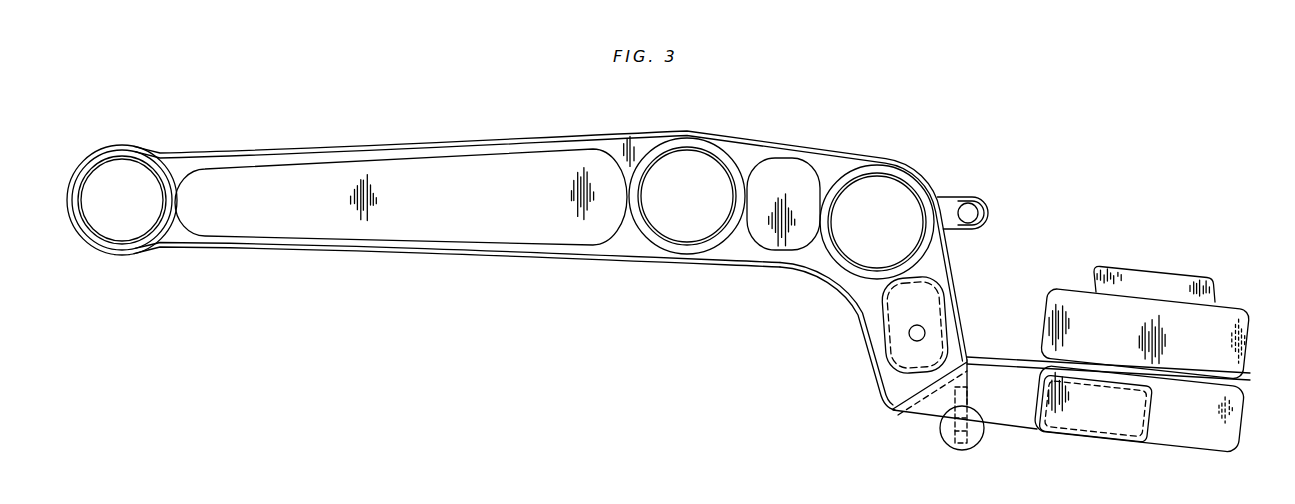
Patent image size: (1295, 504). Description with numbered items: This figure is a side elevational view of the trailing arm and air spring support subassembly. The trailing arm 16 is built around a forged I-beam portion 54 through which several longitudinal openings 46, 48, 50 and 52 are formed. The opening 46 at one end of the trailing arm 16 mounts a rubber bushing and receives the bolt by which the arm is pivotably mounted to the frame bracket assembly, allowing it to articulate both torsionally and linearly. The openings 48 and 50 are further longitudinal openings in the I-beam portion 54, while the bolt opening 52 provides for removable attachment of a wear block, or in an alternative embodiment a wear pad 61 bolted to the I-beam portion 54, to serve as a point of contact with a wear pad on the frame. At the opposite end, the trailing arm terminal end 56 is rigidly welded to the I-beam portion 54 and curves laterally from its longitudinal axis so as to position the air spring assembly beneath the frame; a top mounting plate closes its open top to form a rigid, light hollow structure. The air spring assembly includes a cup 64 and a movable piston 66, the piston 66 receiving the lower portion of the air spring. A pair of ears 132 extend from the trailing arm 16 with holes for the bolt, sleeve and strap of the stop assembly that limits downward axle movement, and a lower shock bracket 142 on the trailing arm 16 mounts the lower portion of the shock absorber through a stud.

The trailing arm 16 is at (355, 131).
The opening 46 is at (107, 181).
The opening 48 is at (683, 168).
The opening 50 is at (884, 197).
The bolt opening 52 is at (925, 333).
The I-beam portion 54 is at (473, 170).
The trailing arm terminal end 56 is at (1007, 412).
The wear pad 61 is at (895, 350).
The cup 64 is at (1223, 417).
The movable piston 66 is at (1228, 352).
The ears 132 is at (980, 203).
The lower shock bracket 142 is at (948, 436).